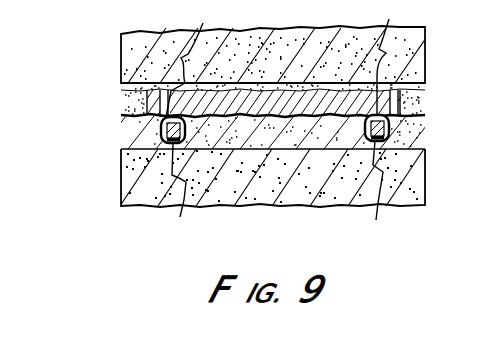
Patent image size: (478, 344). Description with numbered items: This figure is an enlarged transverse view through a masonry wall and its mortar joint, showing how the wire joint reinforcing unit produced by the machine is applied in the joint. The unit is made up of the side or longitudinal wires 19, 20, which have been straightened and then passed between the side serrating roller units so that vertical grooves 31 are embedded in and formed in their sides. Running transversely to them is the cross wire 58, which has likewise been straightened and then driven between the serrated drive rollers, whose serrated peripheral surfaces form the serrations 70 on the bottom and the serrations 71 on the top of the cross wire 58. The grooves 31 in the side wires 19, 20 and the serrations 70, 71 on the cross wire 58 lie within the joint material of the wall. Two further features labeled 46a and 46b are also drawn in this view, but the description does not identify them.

The serration 70 is at (258, 78).
The serration 71 is at (405, 90).
The cross wire 58 is at (427, 92).
The vertical groove 31 is at (161, 126).
The side wire 19 is at (148, 158).
The side wire 20 is at (395, 146).
The upper crack 46a is at (282, 58).
The lower crack 46b is at (288, 191).